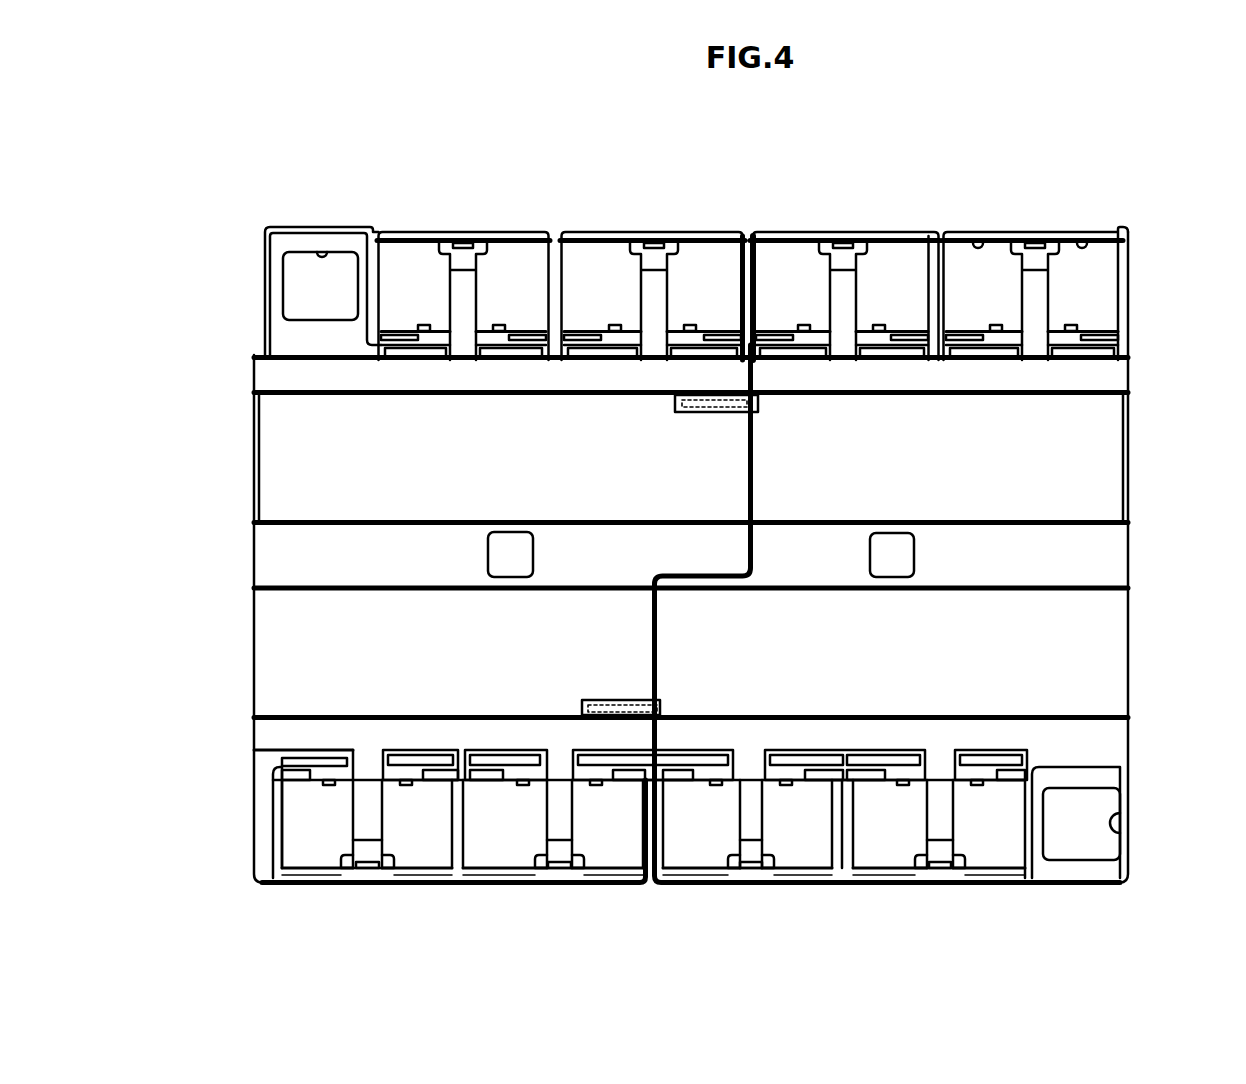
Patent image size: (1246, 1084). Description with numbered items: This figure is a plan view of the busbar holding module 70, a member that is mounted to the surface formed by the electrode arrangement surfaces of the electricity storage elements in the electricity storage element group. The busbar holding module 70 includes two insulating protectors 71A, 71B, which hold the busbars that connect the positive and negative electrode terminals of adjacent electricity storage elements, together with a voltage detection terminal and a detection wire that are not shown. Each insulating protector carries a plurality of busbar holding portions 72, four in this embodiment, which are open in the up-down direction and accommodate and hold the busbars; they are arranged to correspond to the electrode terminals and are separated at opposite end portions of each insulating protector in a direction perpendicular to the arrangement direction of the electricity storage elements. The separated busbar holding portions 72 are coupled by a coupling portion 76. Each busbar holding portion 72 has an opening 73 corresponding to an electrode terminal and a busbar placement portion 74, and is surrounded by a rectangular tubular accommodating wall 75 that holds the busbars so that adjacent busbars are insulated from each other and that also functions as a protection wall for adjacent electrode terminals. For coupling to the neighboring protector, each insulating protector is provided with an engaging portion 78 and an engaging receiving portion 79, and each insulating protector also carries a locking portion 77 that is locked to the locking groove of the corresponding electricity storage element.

The busbar holding module 70 is at (706, 958).
The insulating protector 71A is at (1140, 380).
The insulating protector 71B is at (240, 410).
The busbar holding portion 72 is at (686, 220).
The opening 73 is at (322, 249).
The busbar placement portion 74 is at (462, 283).
The accommodating wall 75 is at (571, 262).
The coupling portion 76 is at (258, 558).
The locking portion 77 is at (507, 532).
The engaging portion 78 is at (732, 402).
The engaging receiving portion 79 is at (692, 409).